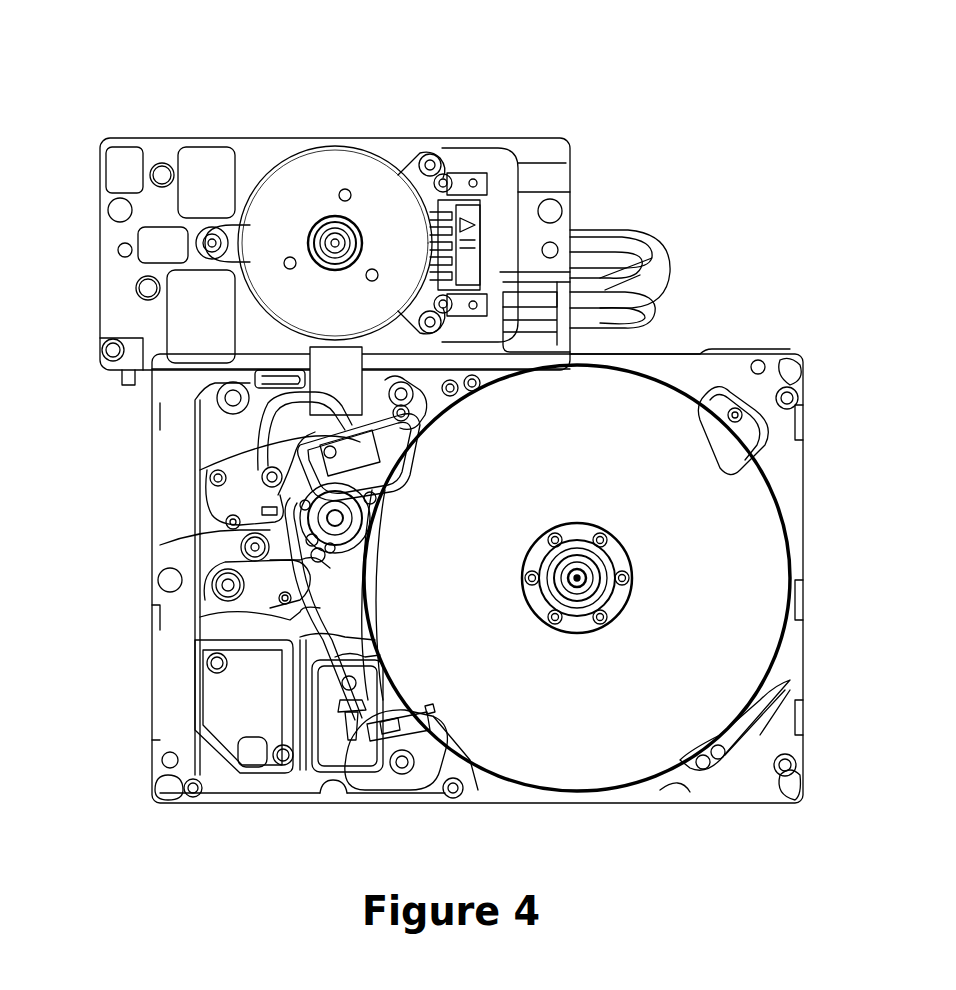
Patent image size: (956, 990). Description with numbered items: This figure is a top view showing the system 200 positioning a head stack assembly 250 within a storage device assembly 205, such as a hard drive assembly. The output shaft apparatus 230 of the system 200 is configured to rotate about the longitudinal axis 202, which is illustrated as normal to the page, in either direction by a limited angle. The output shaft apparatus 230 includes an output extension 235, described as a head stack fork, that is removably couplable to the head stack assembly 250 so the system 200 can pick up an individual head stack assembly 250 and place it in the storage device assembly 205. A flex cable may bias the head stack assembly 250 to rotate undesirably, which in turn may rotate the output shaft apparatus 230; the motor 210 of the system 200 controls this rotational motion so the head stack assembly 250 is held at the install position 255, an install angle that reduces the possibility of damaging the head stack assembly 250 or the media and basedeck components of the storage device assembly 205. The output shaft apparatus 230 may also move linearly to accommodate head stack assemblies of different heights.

The system 200 is at (445, 72).
The longitudinal axis 202 is at (333, 238).
The storage device assembly 205 is at (588, 772).
The motor 210 is at (292, 183).
The output shaft apparatus 230 is at (205, 387).
The output extension 235 is at (266, 465).
The head stack assembly 250 is at (215, 585).
The install position 255 is at (348, 623).